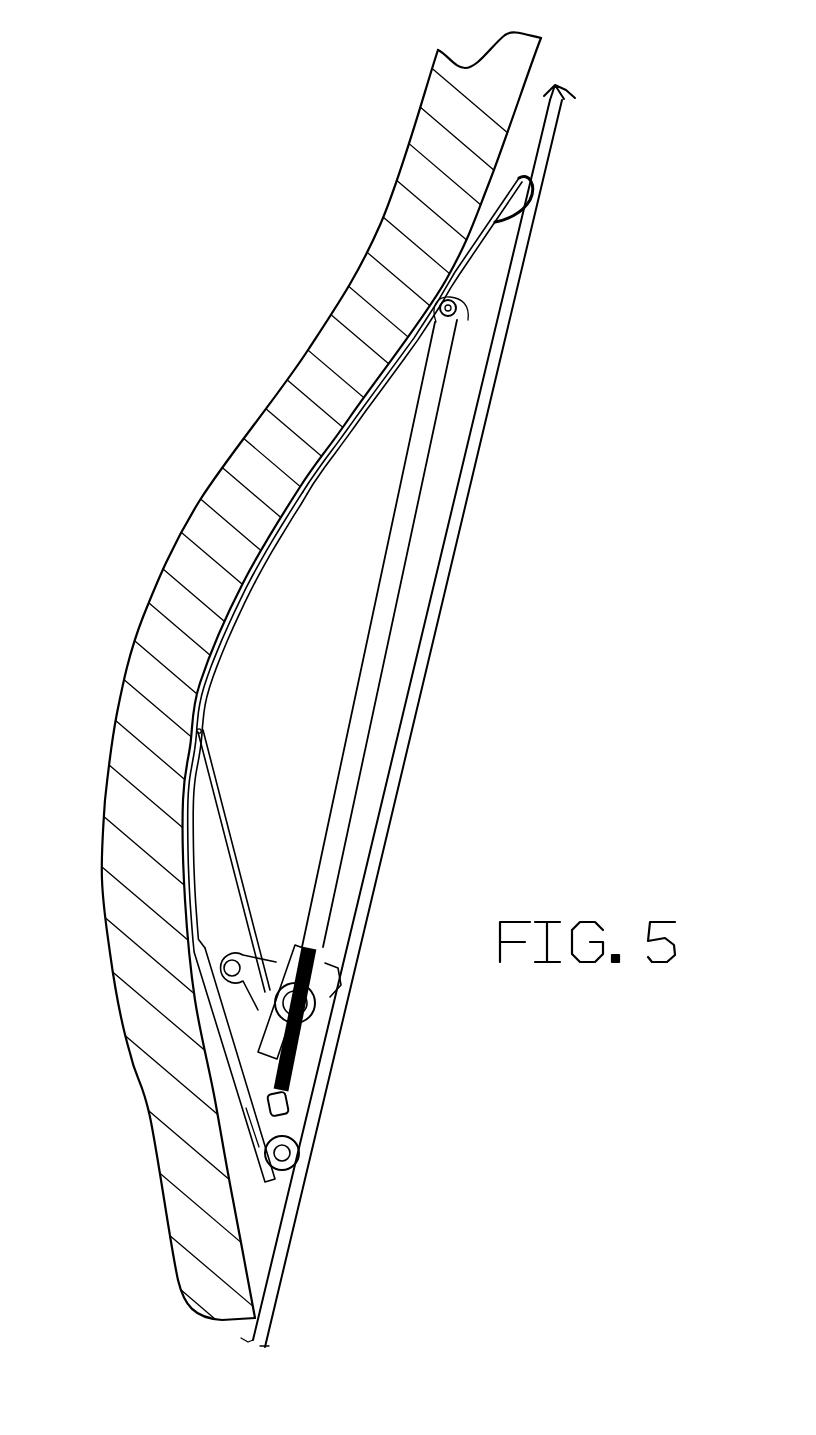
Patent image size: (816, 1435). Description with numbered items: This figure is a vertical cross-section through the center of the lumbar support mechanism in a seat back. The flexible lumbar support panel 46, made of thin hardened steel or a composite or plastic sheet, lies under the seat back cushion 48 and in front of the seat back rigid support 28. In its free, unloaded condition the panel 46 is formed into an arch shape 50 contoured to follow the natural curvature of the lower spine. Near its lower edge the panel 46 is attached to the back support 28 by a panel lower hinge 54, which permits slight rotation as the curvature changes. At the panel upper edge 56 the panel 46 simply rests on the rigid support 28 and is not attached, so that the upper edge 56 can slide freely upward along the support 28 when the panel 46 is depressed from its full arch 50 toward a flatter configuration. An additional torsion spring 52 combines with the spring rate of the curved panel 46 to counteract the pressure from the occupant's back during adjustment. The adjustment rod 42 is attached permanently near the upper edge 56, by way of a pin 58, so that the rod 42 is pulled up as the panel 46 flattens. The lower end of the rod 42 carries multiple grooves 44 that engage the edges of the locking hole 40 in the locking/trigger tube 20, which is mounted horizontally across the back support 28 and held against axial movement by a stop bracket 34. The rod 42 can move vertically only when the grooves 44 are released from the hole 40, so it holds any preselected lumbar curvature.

The seat back cushion 48 is at (200, 500).
The arch shape 50 is at (313, 474).
The lumbar support panel 46 is at (253, 578).
The panel upper edge 56 is at (527, 200).
The torsion spring 52 is at (218, 782).
The seat back rigid support 28 is at (497, 250).
The adjustment rod 42 is at (413, 523).
The pin 58 is at (462, 318).
The grooves 44 is at (285, 1078).
The stop bracket 34 is at (270, 962).
The locking/trigger tube 20 is at (332, 1022).
The locking hole 40 is at (391, 1055).
The panel lower hinge 54 is at (300, 1155).